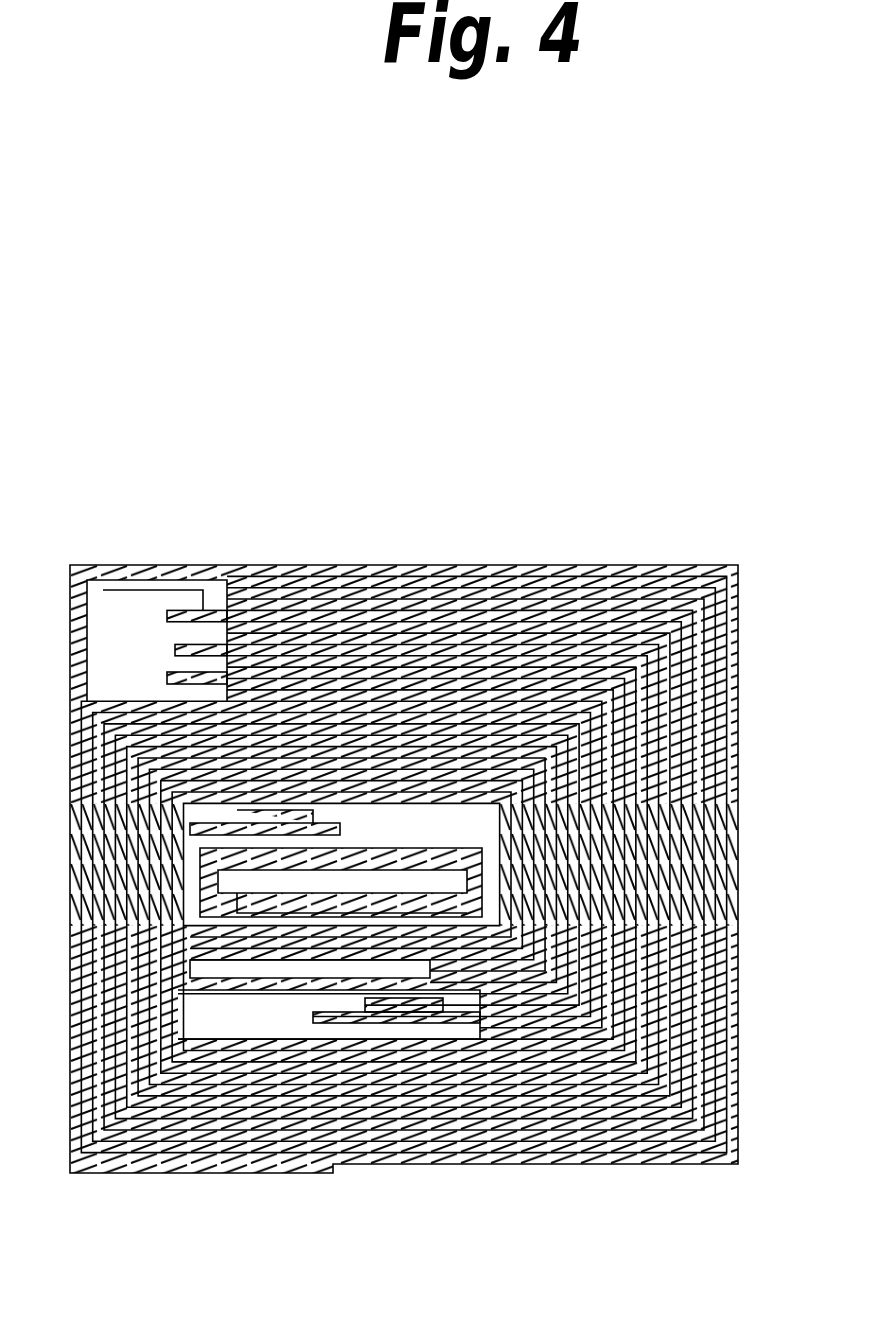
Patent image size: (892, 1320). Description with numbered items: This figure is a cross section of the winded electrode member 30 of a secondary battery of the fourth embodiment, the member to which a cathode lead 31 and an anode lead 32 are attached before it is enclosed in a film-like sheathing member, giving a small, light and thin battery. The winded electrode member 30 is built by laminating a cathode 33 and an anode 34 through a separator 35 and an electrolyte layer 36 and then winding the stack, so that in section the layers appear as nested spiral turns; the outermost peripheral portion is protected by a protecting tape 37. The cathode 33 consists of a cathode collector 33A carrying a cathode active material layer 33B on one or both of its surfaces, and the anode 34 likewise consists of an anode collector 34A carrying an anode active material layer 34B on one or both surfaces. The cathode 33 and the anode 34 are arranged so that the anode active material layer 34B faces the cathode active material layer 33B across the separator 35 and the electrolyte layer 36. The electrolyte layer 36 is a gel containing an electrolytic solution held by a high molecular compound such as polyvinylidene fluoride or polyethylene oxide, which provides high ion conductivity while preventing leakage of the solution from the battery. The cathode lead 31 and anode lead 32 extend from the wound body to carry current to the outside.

The winded electrode member 30 is at (622, 311).
The cathode lead 31 is at (251, 830).
The anode lead 32 is at (400, 1012).
The cathode 33 is at (280, 445).
The cathode collector 33A is at (193, 613).
The cathode active material layer 33B is at (247, 652).
The anode 34 is at (503, 445).
The anode collector 34A is at (343, 592).
The anode active material layer 34B is at (455, 690).
The separator 35 is at (505, 700).
The electrolyte layer 36 is at (603, 700).
The protecting tape 37 is at (697, 565).